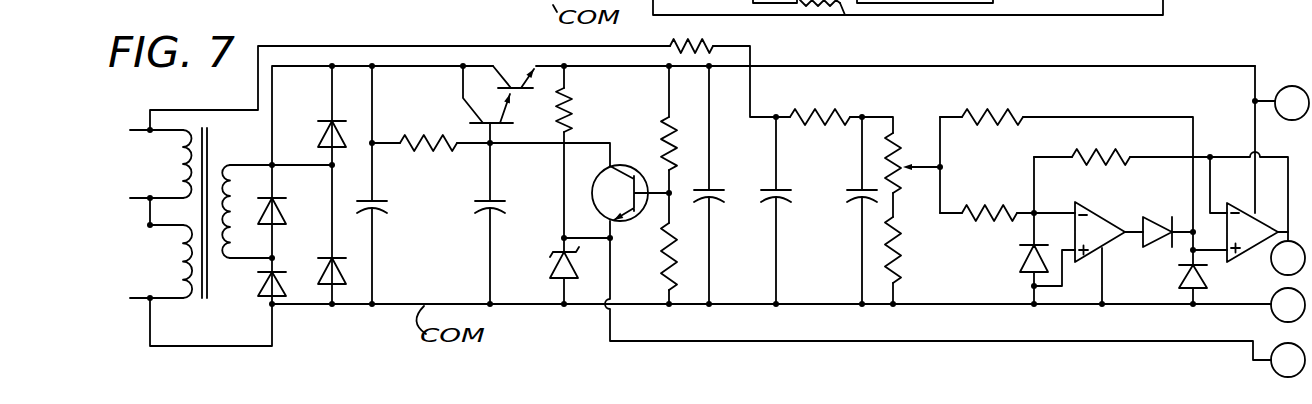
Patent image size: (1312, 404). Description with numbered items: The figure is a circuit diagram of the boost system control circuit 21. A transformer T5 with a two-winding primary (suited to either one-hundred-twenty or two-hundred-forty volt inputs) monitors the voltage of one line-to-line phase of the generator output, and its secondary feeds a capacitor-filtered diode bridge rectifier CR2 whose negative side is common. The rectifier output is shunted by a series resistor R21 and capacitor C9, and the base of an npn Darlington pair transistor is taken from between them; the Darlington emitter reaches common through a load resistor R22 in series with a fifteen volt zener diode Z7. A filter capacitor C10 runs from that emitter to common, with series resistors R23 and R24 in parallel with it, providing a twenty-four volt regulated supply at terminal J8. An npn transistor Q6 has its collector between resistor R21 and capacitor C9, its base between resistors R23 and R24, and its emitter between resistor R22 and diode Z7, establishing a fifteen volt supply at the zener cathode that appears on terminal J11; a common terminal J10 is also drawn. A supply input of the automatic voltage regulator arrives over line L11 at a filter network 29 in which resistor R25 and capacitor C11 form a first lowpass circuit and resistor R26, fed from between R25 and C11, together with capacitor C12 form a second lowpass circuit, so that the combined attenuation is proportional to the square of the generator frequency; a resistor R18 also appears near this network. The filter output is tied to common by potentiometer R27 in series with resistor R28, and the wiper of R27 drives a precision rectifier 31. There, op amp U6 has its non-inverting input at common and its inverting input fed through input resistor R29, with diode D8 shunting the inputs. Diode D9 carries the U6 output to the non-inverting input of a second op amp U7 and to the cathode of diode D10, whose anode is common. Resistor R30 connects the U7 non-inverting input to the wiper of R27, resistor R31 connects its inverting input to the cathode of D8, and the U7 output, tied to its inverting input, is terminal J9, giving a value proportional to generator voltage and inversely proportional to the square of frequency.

The boost system control circuit 21 is at (143, 167).
The transformer T5 is at (220, 128).
The diode bridge rectifier CR2 is at (350, 88).
The line L11 is at (331, 46).
The resistor R21 is at (406, 150).
The capacitor C9 is at (478, 210).
The load resistor R22 is at (574, 102).
The zener diode Z7 is at (551, 255).
The npn transistor Q6 is at (613, 166).
The resistor R23 is at (658, 128).
The resistor R24 is at (666, 252).
The filter capacitor C10 is at (716, 189).
The resistor R25 is at (697, 40).
The resistor R18 is at (845, 4).
The filter network 29 is at (886, 58).
The resistor R26 is at (812, 110).
The capacitor C11 is at (780, 200).
The capacitor C12 is at (853, 188).
The potentiometer R27 is at (900, 136).
The resistor R28 is at (902, 257).
The input resistor R29 is at (1019, 180).
The resistor R30 is at (1007, 112).
The resistor R31 is at (1094, 147).
The diode D8 is at (1025, 258).
The diode D9 is at (1173, 200).
The diode D10 is at (1205, 275).
The op amp U6 is at (1079, 254).
The second op amp U7 is at (1240, 164).
The precision rectifier 31 is at (1182, 48).
The terminal J8 is at (1280, 103).
The terminal J9 is at (1288, 258).
The connector terminal J10 is at (788, 305).
The terminal J11 is at (1288, 360).